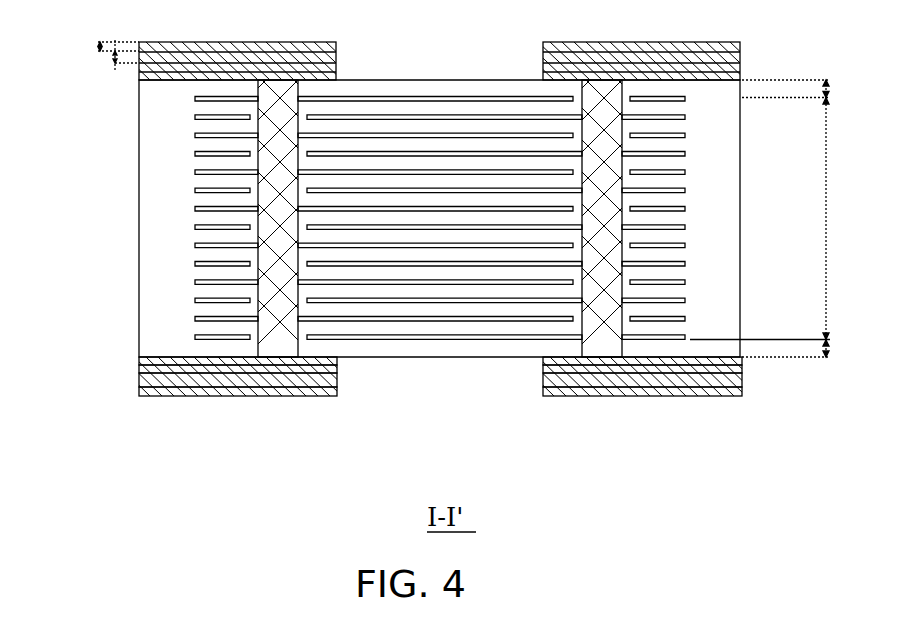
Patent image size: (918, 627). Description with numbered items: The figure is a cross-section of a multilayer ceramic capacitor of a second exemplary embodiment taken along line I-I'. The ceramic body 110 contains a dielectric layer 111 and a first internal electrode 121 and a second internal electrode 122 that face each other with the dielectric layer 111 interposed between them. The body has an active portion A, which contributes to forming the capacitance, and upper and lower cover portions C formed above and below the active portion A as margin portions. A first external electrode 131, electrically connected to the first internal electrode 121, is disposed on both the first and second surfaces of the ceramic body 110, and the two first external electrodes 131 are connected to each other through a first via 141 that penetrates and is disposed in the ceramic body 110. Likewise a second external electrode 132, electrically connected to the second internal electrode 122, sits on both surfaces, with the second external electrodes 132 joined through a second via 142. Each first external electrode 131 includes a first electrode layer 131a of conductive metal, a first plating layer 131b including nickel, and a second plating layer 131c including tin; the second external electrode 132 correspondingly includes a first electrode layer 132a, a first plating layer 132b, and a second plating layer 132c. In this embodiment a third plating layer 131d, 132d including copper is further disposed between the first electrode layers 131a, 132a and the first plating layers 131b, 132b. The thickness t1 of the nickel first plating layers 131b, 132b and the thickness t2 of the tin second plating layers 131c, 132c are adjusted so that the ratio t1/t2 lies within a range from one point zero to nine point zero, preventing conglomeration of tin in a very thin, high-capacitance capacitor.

The ceramic body 110 is at (463, 79).
The dielectric layer 111 is at (212, 218).
The first internal electrode 121 is at (202, 99).
The second internal electrode 122 is at (205, 121).
The first external electrode 131 is at (238, 425).
The first electrode layer 131a is at (176, 381).
The first plating layer 131b is at (218, 374).
The second plating layer 131c is at (262, 384).
The third plating layer 131d is at (135, 457).
The second external electrode 132 is at (642, 426).
The first electrode layer 132a is at (717, 393).
The first plating layer 132b is at (668, 388).
The second plating layer 132c is at (623, 384).
The third plating layer 132d is at (748, 457).
The first via 141 is at (267, 268).
The second via 142 is at (622, 268).
The thickness of the first plating layer t1 is at (115, 57).
The thickness of the second plating layer t2 is at (98, 47).
The active portion A is at (836, 219).
The cover portion C is at (769, 221).